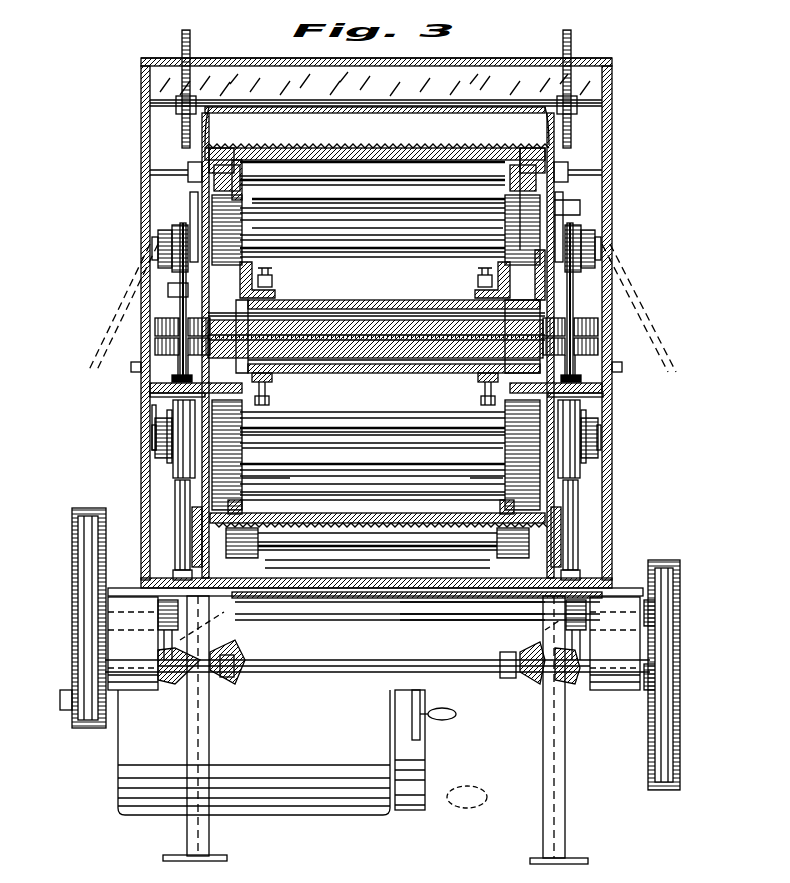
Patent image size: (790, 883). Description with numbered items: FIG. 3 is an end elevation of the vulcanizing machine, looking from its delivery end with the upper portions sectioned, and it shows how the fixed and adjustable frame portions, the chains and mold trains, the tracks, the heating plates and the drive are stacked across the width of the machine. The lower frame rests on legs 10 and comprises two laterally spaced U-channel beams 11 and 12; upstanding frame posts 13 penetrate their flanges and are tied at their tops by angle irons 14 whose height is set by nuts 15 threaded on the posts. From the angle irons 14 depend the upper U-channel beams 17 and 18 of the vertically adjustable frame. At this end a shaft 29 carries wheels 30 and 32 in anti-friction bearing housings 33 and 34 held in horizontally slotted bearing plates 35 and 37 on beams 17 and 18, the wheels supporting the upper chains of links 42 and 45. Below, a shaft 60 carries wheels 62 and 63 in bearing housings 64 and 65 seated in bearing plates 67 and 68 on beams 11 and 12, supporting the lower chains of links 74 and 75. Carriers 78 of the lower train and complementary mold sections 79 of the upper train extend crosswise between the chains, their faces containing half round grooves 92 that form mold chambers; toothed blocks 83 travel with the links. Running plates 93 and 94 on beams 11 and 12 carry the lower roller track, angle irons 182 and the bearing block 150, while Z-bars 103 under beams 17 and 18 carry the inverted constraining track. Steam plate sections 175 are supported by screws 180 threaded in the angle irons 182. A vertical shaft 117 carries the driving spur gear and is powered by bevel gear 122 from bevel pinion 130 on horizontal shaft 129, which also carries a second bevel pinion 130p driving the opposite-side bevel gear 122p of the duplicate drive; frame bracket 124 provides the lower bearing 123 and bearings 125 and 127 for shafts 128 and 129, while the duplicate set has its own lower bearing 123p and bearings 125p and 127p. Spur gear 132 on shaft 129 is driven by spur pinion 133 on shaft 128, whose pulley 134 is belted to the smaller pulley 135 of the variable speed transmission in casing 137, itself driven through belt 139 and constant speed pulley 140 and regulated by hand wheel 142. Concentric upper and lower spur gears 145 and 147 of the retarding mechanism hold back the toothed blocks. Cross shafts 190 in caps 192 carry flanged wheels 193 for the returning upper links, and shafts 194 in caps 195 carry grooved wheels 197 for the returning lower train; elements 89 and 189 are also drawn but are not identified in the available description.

The legs 10 is at (194, 852).
The U-channel beam 11 is at (173, 476).
The U-channel beam 12 is at (580, 482).
The frame posts 13 is at (185, 32).
The angle irons 14 is at (160, 78).
The nuts 15 is at (168, 108).
The U-channel beam 17 is at (202, 148).
The U-channel beam 18 is at (554, 152).
The shaft 29 is at (368, 236).
The wheel 30 is at (225, 232).
The wheel 32 is at (526, 232).
The anti-friction bearing housing 33 is at (162, 238).
The anti-friction bearing housing 34 is at (602, 242).
The bearing plate 35 is at (178, 276).
The bearing plate 37 is at (560, 210).
The chain of links 42 is at (518, 148).
The chain of links 45 is at (238, 160).
The shaft 60 is at (388, 442).
The wheel 62 is at (232, 455).
The wheel 63 is at (525, 458).
The anti-friction bearing housing 64 is at (150, 430).
The anti-friction bearing housing 65 is at (602, 438).
The bearing plate 67 is at (176, 490).
The bearing plate 68 is at (568, 488).
The chain of links 74 is at (520, 488).
The chain of links 75 is at (240, 488).
The carriers 78 is at (318, 148).
The mold sections 79 is at (362, 375).
The toothed blocks 83 is at (220, 148).
The roller 89 is at (320, 535).
The half round grooves 92 is at (358, 148).
The running plate 93 is at (150, 404).
The running plate 94 is at (602, 402).
The Z-bars 103 is at (248, 272).
The vertical shaft 117 is at (176, 566).
The bevel gear 122 is at (588, 690).
The bevel gear 122p is at (220, 654).
The lower bearing 123 is at (545, 612).
The lower bearing 123p is at (180, 612).
The frame bracket 124 is at (130, 588).
The bearing 125 is at (622, 616).
The bearing 125p is at (130, 614).
The bearing 127 is at (606, 684).
The bearing 127p is at (130, 680).
The horizontal shaft 128 is at (448, 622).
The horizontal shaft 129 is at (480, 676).
The bevel pinion 130 is at (528, 686).
The bevel pinion 130p is at (216, 684).
The spur gear 132 is at (670, 748).
The spur pinion 133 is at (660, 612).
The pulley 134 is at (72, 600).
The pulley 135 is at (72, 702).
The casing 137 is at (288, 790).
The belt 139 is at (425, 762).
The constant speed pulley 140 is at (425, 797).
The hand wheel 142 is at (426, 735).
The upper spur gear 145 is at (155, 322).
The lower spur gear 147 is at (155, 342).
The bearing block 150 is at (178, 362).
The steam plate sections 175 is at (412, 375).
The screws 180 is at (266, 405).
The angle irons 182 is at (266, 382).
The shaft 189 is at (160, 82).
The cross shafts 190 is at (372, 184).
The caps 192 is at (188, 176).
The flanged wheels 193 is at (240, 170).
The shafts 194 is at (338, 514).
The caps 195 is at (192, 524).
The grooved wheels 197 is at (245, 510).